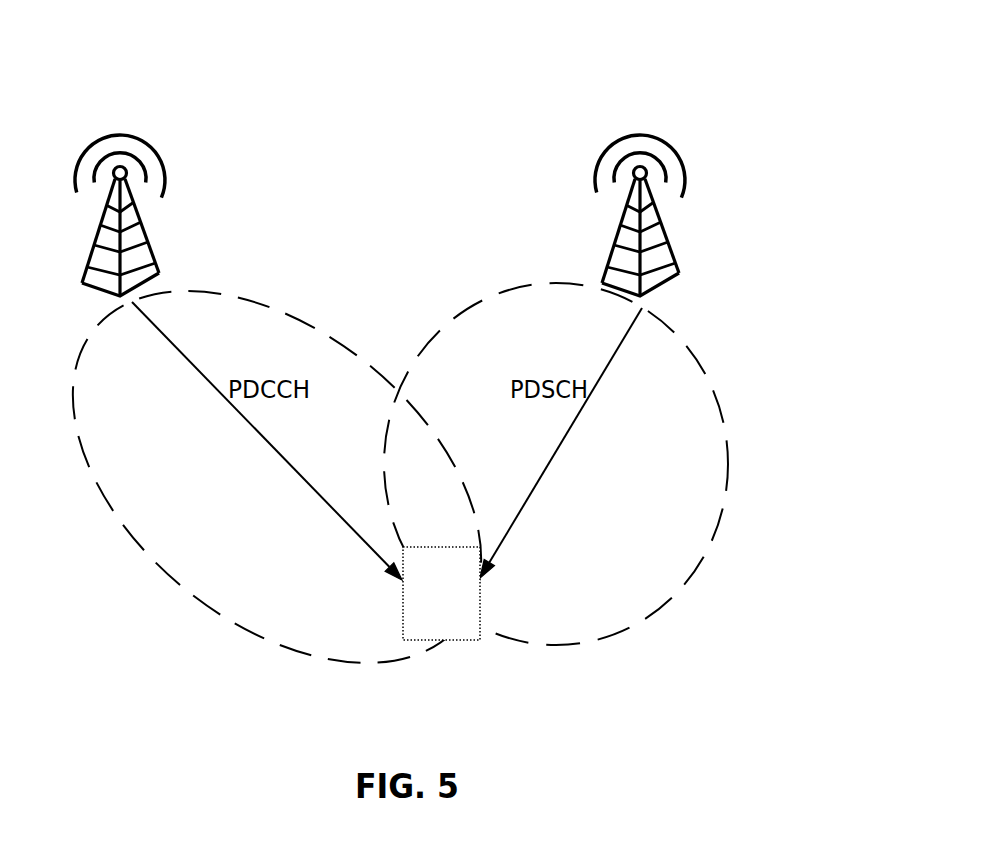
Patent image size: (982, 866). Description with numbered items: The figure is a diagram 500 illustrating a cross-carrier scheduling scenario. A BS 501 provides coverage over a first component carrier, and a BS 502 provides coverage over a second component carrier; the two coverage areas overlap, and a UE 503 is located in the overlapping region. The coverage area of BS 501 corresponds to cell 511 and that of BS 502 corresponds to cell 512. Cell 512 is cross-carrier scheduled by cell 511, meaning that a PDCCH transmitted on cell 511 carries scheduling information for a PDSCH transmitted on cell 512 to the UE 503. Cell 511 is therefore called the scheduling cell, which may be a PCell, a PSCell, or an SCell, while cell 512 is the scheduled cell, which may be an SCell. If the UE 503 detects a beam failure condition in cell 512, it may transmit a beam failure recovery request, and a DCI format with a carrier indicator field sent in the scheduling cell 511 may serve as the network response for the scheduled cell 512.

The diagram 500 is at (797, 72).
The BS 501 is at (155, 243).
The BS 502 is at (667, 243).
The UE 503 is at (441, 641).
The cell 511 is at (243, 300).
The cell 512 is at (703, 378).